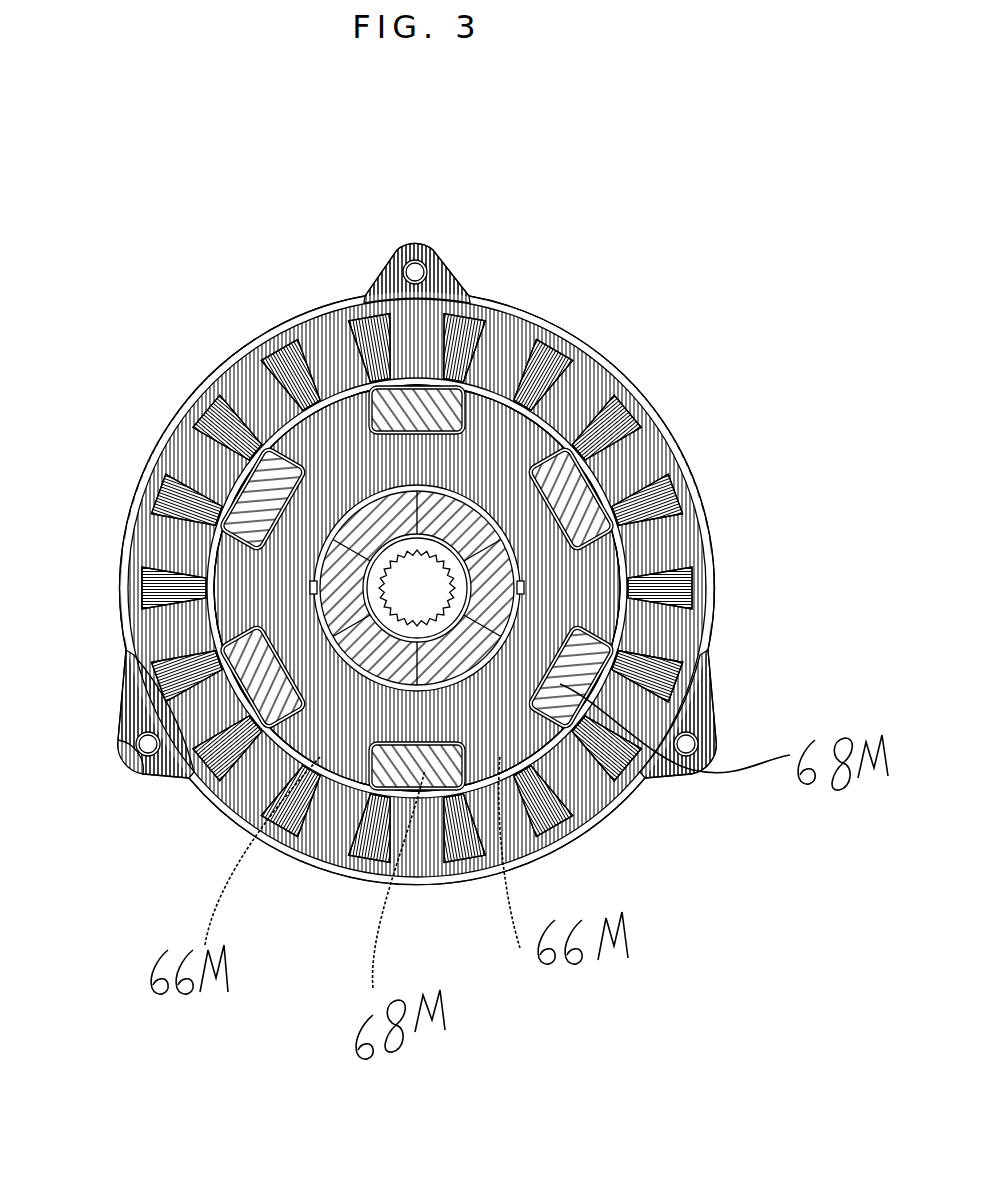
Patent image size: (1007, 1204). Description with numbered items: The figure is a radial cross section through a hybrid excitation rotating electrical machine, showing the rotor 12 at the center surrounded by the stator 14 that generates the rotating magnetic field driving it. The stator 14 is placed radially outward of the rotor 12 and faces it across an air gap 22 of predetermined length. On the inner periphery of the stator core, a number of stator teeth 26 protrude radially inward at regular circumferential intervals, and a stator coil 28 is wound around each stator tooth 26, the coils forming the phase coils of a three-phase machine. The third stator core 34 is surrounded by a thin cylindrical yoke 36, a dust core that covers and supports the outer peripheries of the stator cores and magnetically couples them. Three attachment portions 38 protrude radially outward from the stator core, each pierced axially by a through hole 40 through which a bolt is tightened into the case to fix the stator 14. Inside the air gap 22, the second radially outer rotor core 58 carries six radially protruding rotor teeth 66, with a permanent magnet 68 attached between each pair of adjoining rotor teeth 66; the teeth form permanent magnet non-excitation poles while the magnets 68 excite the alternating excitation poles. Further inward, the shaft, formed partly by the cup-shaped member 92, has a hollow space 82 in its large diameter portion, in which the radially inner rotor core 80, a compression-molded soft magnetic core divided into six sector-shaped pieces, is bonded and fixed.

The rotor 12 is at (622, 630).
The stator 14 is at (492, 280).
The air gap 22 is at (178, 565).
The stator tooth 26 is at (247, 783).
The stator coil 28 is at (360, 850).
The third stator core 34 is at (653, 453).
The yoke 36 is at (576, 332).
The attachment portion 38 is at (127, 722).
The through hole 40 is at (146, 746).
The second radially outer rotor core 58 is at (308, 428).
The rotor tooth 66 is at (518, 428).
The permanent magnet 68 is at (230, 632).
The radially inner rotor core 80 is at (433, 522).
The hollow space 82 is at (567, 795).
The cup-shaped member 92 is at (403, 547).